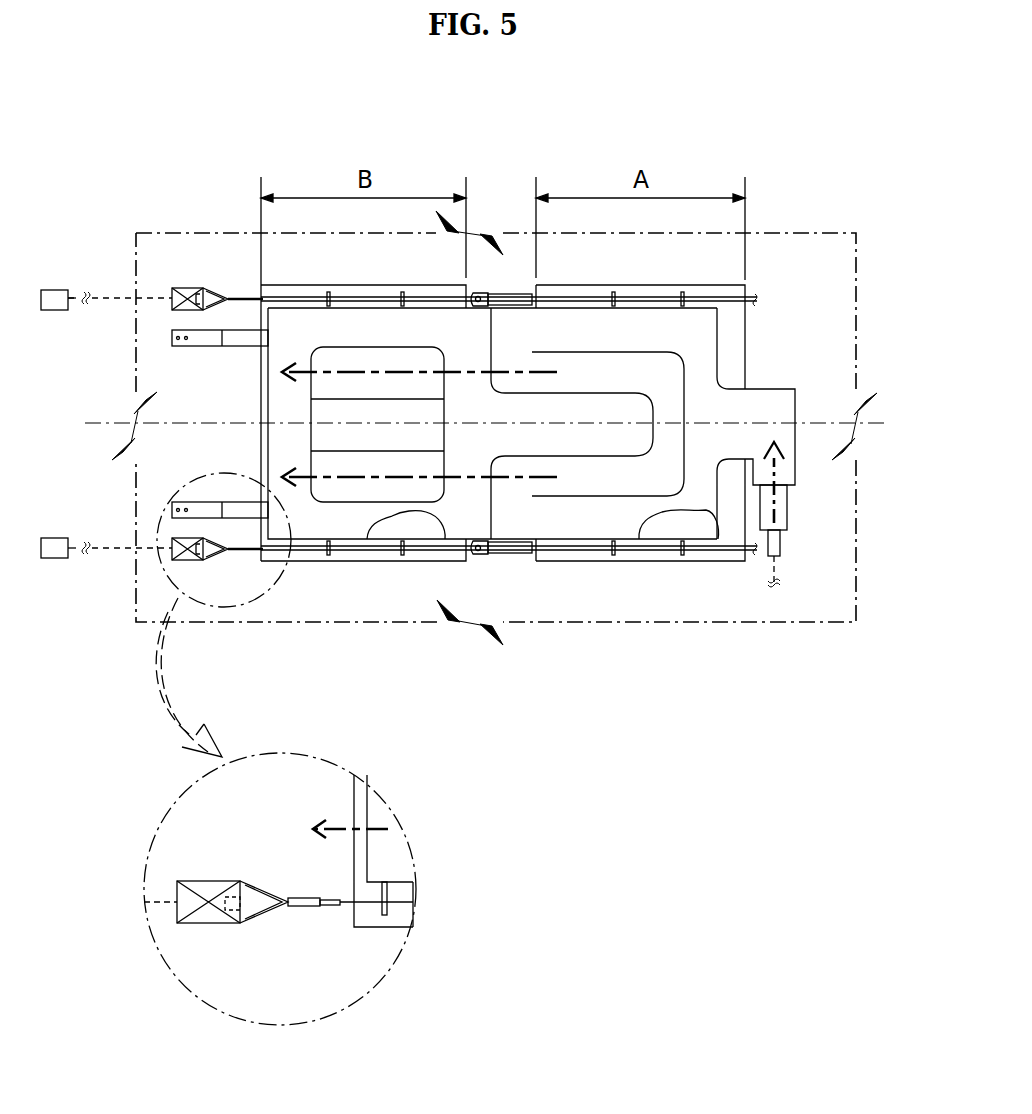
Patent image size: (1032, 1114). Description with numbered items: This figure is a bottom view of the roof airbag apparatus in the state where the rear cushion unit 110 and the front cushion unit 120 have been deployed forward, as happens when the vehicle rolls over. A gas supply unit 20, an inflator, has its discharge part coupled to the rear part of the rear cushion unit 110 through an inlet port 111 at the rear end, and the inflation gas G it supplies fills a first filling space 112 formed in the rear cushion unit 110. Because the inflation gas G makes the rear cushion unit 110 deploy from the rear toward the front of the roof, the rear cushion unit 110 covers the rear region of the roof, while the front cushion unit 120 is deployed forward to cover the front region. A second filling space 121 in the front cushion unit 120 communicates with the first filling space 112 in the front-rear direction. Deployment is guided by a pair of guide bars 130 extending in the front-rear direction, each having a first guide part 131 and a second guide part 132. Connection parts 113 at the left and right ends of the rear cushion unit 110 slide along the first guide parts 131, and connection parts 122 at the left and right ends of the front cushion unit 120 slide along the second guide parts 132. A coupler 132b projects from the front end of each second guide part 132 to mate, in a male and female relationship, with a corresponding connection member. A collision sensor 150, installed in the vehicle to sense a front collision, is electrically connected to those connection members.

The rear cushion unit 110 is at (666, 326).
The inlet port 111 is at (760, 407).
The first filling space 112 is at (686, 529).
The connection part 113 is at (613, 560).
The front cushion unit 120 is at (431, 324).
The second filling space 121 is at (405, 529).
The connection part 122 is at (328, 553).
The guide bar 130 is at (509, 192).
The first guide part 131 is at (580, 298).
The second guide part 132 is at (441, 297).
The coupler 132b is at (298, 907).
The collision sensor 150 is at (53, 290).
The gas supply unit 20 is at (782, 520).
The inflation gas G is at (780, 466).